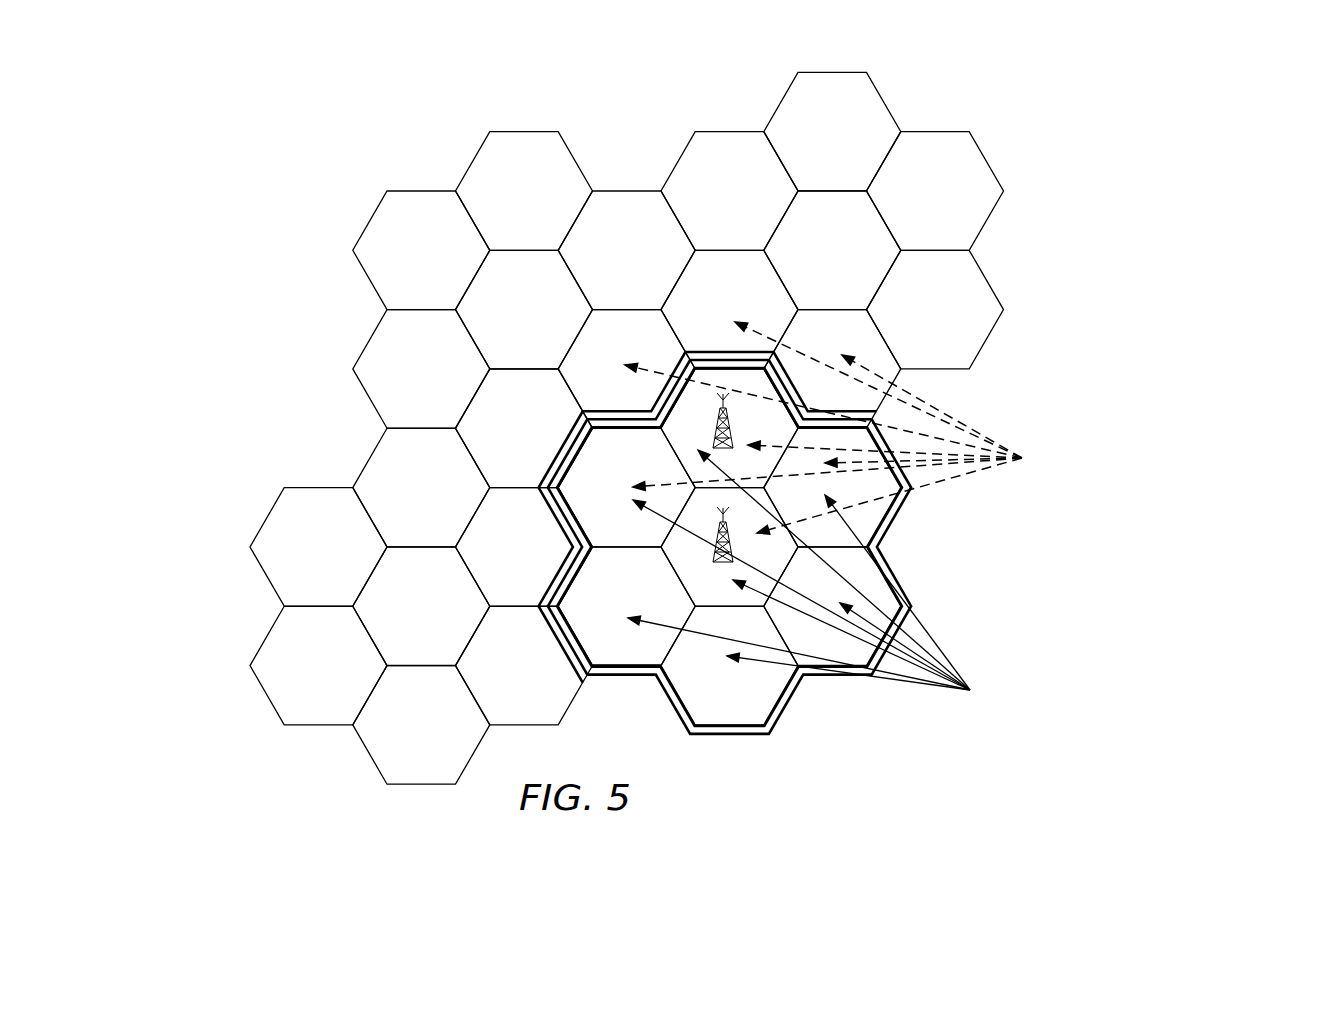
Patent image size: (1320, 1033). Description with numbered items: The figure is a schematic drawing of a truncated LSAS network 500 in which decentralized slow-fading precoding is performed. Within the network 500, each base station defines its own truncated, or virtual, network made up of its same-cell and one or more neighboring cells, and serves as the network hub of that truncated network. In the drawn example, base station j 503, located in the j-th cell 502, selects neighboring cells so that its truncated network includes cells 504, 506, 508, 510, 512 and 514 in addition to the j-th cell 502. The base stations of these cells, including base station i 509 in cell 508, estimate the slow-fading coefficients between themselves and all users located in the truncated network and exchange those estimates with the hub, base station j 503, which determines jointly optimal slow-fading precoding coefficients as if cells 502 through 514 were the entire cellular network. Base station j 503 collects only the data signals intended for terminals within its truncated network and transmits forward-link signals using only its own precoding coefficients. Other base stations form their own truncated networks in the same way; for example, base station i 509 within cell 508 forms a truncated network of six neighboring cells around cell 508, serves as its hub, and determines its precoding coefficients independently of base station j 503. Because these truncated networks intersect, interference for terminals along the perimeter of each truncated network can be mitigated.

The network 500 is at (374, 150).
The j-th cell 502 is at (678, 558).
The base station j 503 is at (657, 663).
The cell 504 is at (818, 642).
The cell 506 is at (857, 520).
The cell 508 is at (693, 427).
The base station i 509 is at (714, 412).
The cell 510 is at (595, 475).
The cell 512 is at (587, 618).
The cell 514 is at (720, 700).